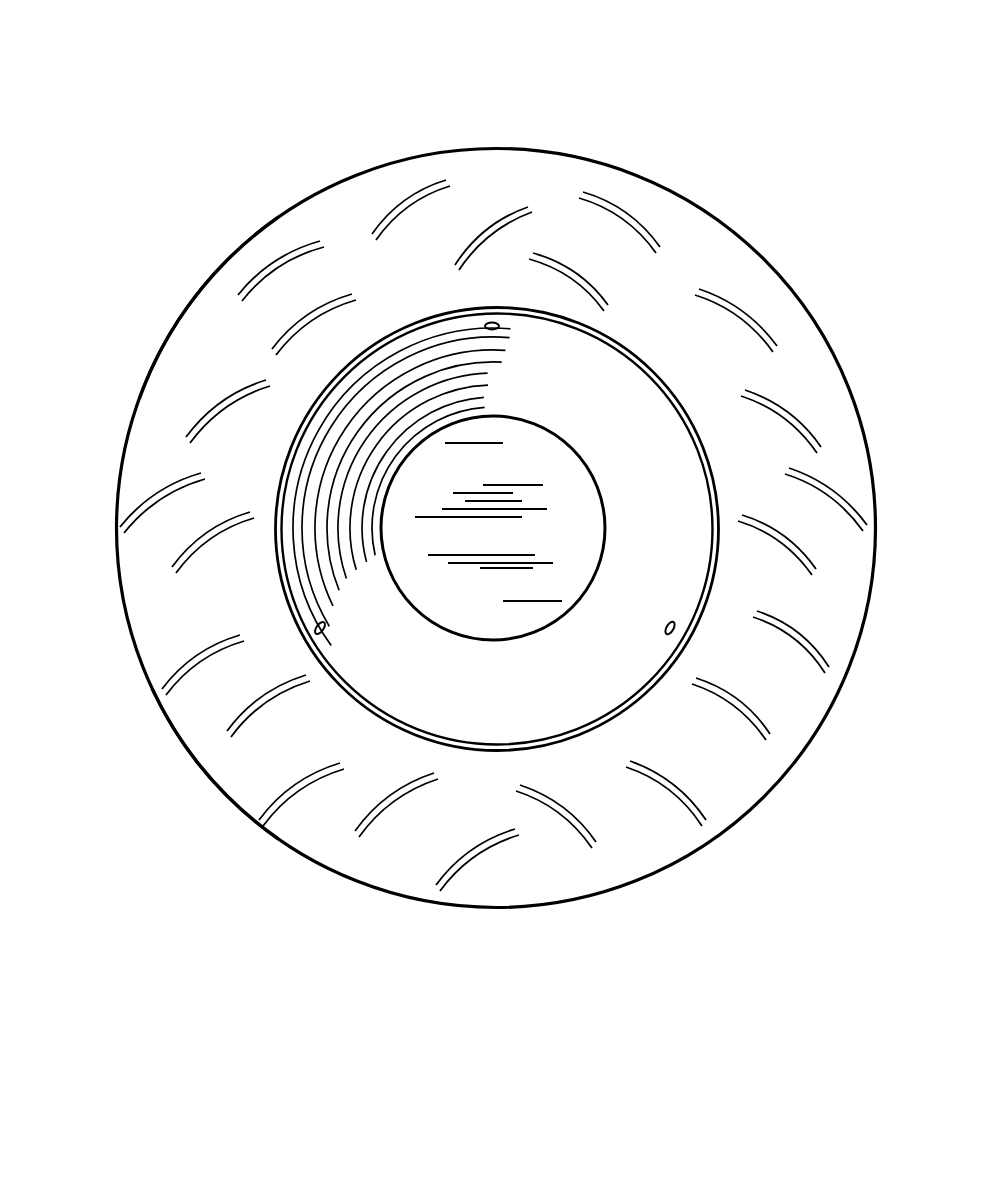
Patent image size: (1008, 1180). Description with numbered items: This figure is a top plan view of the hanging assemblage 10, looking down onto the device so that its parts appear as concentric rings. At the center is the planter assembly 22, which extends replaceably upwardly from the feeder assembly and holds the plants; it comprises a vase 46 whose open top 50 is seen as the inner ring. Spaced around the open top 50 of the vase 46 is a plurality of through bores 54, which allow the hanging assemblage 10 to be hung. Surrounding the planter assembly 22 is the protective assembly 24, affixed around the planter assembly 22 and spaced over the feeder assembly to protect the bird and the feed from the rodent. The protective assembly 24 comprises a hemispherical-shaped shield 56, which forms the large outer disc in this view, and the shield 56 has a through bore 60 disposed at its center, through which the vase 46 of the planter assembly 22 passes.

The hanging assemblage 10 is at (113, 95).
The planter assembly 22 is at (350, 337).
The protective assembly 24 is at (112, 468).
The vase 46 is at (270, 585).
The open top 50 is at (408, 322).
The through bores 54 is at (505, 327).
The shield 56 is at (192, 773).
The through bore 60 is at (172, 327).